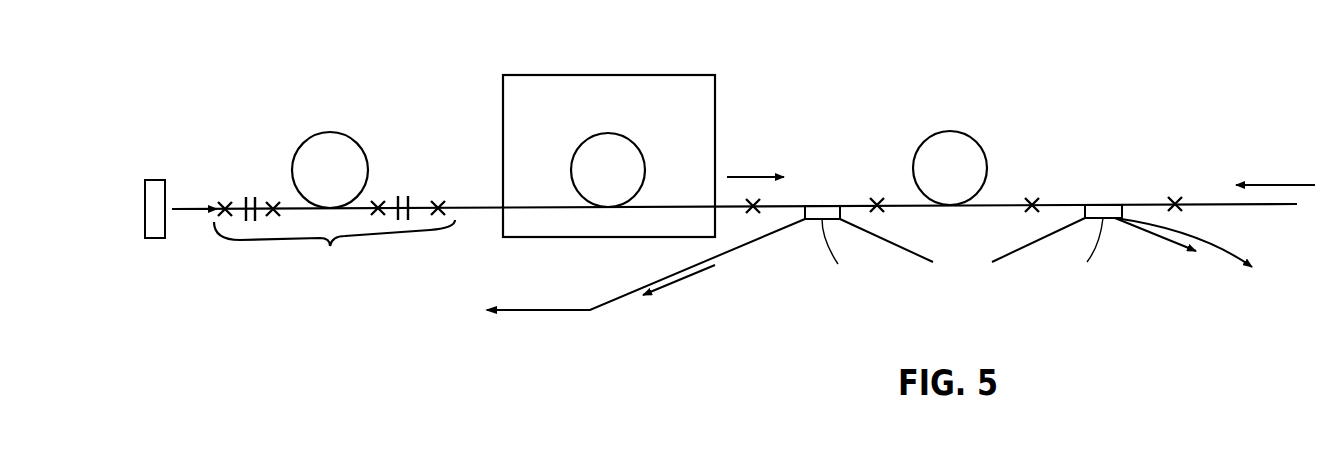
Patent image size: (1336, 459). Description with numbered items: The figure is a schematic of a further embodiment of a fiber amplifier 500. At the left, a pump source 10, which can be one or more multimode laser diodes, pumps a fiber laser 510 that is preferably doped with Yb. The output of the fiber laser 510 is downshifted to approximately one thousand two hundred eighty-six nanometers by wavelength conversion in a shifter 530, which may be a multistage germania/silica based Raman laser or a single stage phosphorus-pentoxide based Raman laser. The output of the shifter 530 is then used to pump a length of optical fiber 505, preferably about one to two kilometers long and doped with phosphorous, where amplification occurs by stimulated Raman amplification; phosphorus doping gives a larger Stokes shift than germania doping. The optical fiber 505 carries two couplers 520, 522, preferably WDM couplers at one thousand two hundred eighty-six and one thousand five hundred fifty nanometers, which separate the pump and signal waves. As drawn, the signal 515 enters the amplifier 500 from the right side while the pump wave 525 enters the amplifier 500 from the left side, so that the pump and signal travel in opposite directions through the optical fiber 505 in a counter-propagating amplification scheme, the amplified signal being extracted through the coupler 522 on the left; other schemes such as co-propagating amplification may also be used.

The amplifier 500 is at (311, 70).
The pump source 10 is at (145, 180).
The pump wave 525 is at (190, 210).
The fiber laser 510 is at (328, 187).
The shifter 530 is at (606, 75).
The coupler 522 is at (822, 206).
The optical fiber 505 is at (1007, 206).
The signal 515 is at (1285, 152).
The coupler 520 is at (1110, 219).